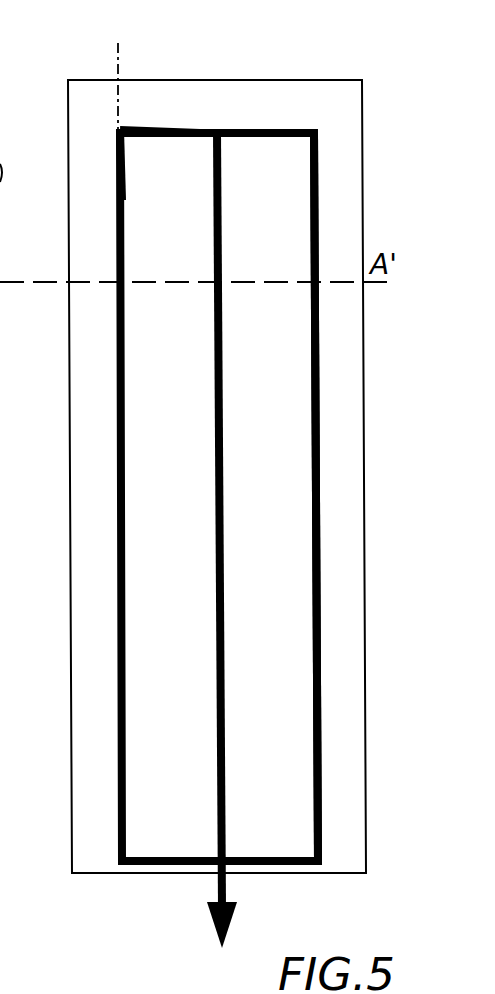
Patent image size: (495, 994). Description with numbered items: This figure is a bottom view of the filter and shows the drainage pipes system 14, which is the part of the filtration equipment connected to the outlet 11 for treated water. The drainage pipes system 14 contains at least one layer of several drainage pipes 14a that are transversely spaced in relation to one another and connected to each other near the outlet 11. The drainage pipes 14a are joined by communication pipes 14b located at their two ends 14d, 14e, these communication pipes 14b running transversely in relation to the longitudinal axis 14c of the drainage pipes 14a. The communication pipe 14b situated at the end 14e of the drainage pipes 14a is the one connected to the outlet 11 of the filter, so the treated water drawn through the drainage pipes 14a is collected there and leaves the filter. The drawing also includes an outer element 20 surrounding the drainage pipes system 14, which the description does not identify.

The outlet 11 is at (221, 562).
The drainage pipes system 14 is at (110, 214).
The drainage pipes 14a is at (318, 556).
The communication pipes 14b is at (255, 133).
The longitudinal axis 14c is at (118, 130).
The end of the drainage pipes 14d is at (153, 70).
The end of the drainage pipes 14e is at (120, 865).
The substrate 20 is at (197, 537).